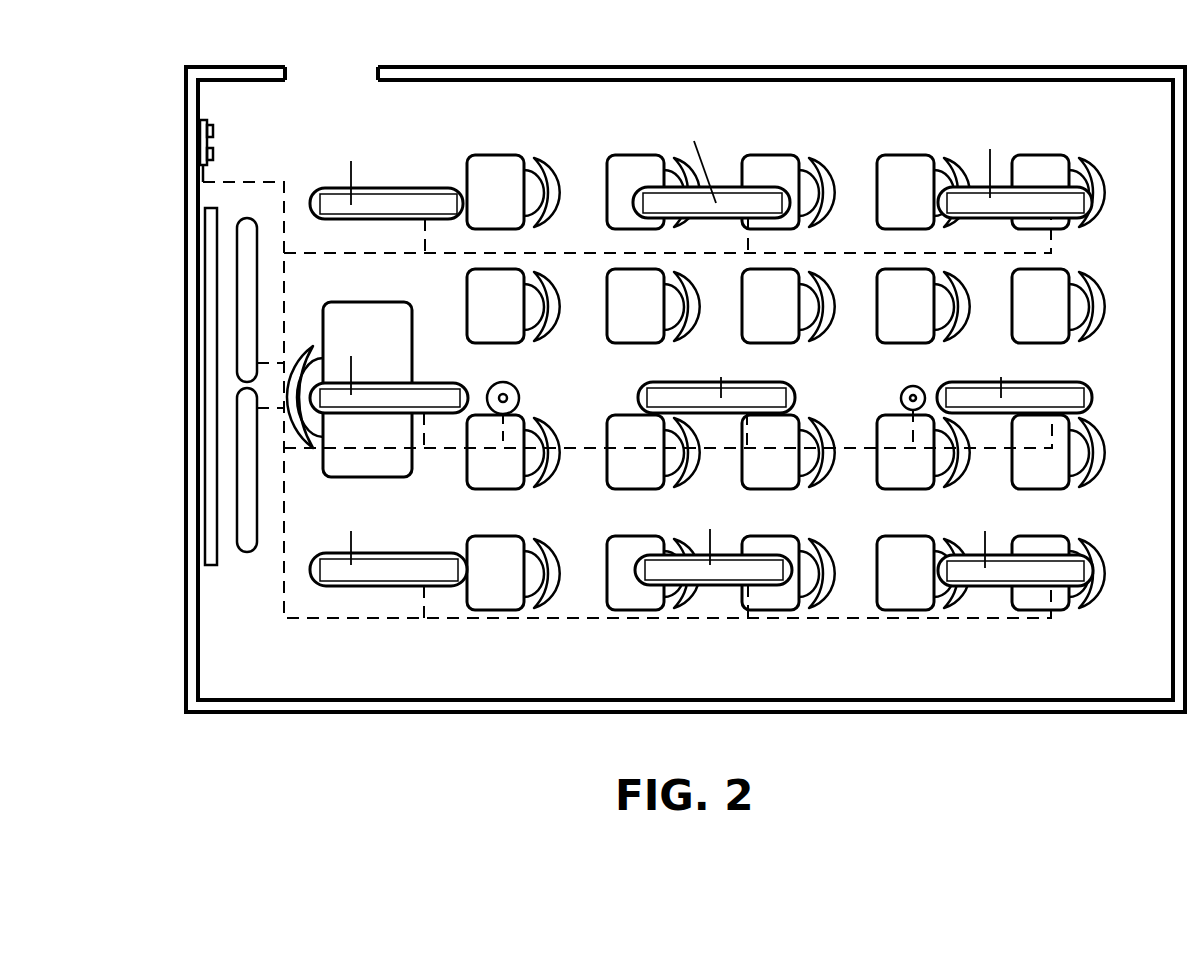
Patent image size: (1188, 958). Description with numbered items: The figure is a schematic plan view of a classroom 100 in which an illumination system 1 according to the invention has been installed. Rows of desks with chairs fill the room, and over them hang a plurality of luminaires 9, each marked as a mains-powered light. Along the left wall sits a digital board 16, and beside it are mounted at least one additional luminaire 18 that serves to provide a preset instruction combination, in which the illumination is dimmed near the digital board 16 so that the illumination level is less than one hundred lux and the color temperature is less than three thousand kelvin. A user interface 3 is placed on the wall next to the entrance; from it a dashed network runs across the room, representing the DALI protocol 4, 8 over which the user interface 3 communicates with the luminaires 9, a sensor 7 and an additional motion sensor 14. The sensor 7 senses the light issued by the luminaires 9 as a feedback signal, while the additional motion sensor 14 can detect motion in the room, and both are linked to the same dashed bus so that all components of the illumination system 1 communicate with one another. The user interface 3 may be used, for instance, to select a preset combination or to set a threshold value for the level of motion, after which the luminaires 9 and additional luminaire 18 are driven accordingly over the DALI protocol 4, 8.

The classroom 100 is at (958, 97).
The illumination system 1 is at (436, 187).
The user interface 3 is at (208, 142).
The DALI protocol 4 is at (522, 412).
The sensor 7 is at (517, 388).
The DALI protocol 8 is at (284, 287).
The luminaires 9 is at (412, 187).
The additional motion sensor 14 is at (905, 390).
The digital board 16 is at (212, 441).
The additional luminaire 18 is at (243, 550).